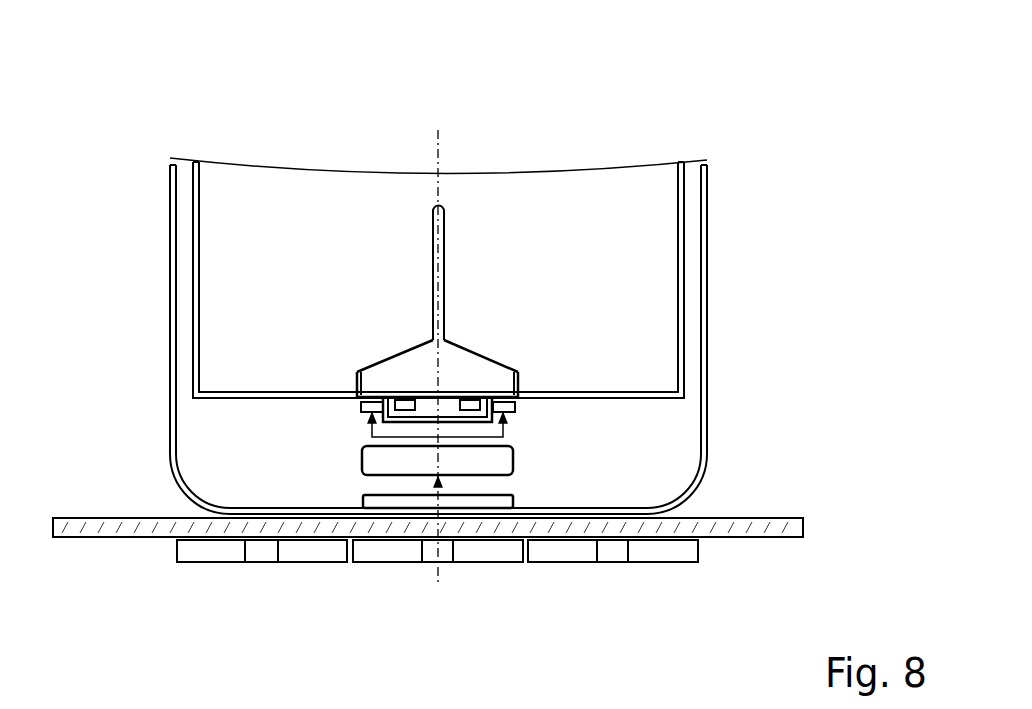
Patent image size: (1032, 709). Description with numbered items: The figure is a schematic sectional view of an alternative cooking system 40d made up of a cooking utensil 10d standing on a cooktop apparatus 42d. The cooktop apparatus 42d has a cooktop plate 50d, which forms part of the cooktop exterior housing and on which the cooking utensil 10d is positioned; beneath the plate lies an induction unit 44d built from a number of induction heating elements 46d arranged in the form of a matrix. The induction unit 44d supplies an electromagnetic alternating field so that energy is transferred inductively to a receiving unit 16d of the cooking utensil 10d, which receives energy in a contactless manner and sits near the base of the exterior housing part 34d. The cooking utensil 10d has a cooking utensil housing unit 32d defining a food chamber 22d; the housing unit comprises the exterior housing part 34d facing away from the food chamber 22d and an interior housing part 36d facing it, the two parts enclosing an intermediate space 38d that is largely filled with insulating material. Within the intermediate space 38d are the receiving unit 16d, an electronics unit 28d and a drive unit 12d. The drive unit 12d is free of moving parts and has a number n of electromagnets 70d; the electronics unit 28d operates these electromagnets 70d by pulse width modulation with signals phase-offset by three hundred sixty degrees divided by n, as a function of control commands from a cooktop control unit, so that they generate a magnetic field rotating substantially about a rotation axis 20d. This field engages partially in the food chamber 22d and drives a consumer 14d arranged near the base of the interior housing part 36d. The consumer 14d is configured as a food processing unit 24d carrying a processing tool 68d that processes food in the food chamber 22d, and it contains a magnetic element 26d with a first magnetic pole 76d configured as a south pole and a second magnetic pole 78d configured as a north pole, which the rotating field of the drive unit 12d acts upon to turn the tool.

The cooking utensil 10d is at (518, 331).
The drive unit 12d is at (522, 421).
The consumer 14d is at (505, 310).
The receiving unit 16d is at (503, 501).
The rotation axis 20d is at (438, 148).
The food chamber 22d is at (316, 249).
The food processing unit 24d is at (497, 335).
The magnetic element 26d is at (372, 437).
The electronics unit 28d is at (497, 463).
The cooking utensil housing unit 32d is at (708, 228).
The exterior housing part 34d is at (708, 288).
The interior housing part 36d is at (680, 162).
The intermediate space 38d is at (268, 478).
The cooking system 40d is at (812, 85).
The cooktop apparatus 42d is at (792, 488).
The induction unit 44d is at (364, 595).
The induction heating element 46d is at (212, 548).
The cooktop plate 50d is at (83, 528).
The processing tool 68d is at (502, 382).
The electromagnet 70d is at (515, 406).
The first magnetic pole 76d is at (412, 402).
The second magnetic pole 78d is at (473, 402).